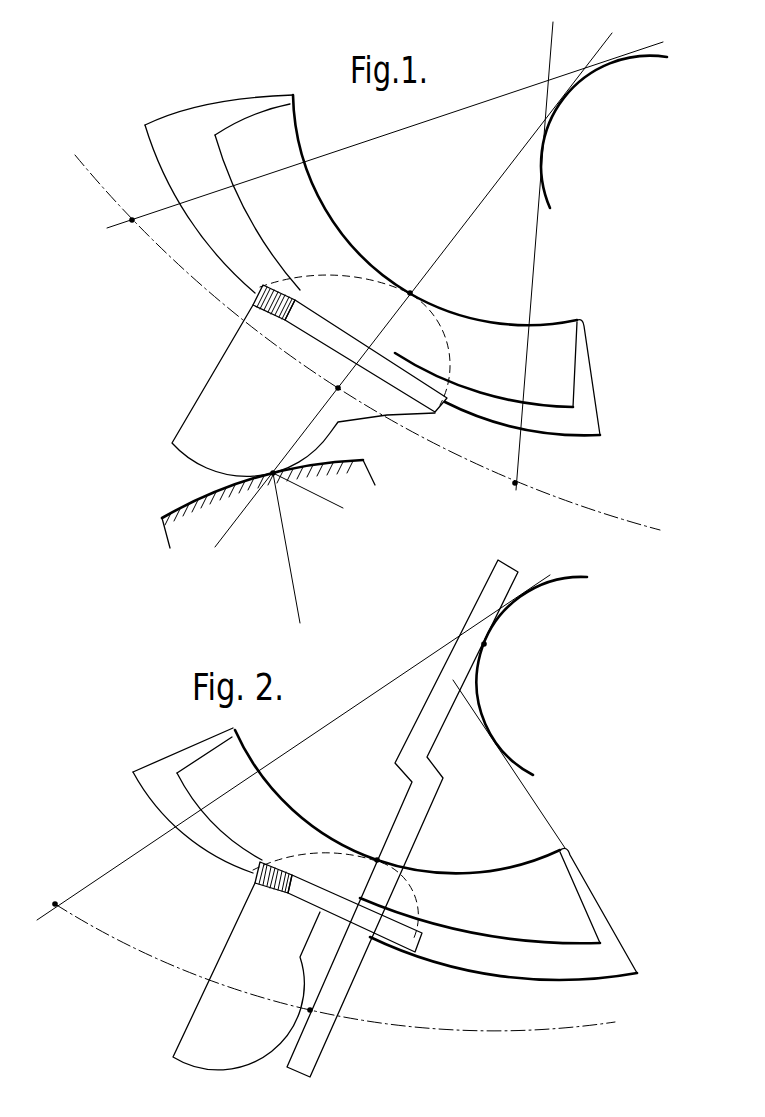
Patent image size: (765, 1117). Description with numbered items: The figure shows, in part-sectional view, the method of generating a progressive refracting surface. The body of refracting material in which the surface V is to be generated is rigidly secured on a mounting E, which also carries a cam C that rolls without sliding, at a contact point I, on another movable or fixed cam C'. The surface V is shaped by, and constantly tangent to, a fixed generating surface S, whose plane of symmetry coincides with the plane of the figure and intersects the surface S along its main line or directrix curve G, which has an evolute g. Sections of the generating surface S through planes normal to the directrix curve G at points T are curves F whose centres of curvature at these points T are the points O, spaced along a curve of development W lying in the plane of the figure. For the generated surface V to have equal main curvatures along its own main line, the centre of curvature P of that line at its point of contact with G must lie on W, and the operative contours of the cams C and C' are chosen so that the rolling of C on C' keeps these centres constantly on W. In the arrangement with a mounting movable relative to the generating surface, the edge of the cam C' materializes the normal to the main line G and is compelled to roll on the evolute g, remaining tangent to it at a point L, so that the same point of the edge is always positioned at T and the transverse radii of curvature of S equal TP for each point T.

In FIG. 1, the main line or directrix curve G is at (326, 189).
In FIG. 2, the main line or directrix curve G is at (289, 781).
In FIG. 1, the fixed generating surface S is at (549, 334).
In FIG. 2, the fixed generating surface S is at (567, 920).
In FIG. 1, the mounting E is at (297, 315).
In FIG. 2, the mounting E is at (311, 899).
In FIG. 1, the surface to be generated V is at (257, 290).
In FIG. 2, the surface to be generated V is at (259, 879).
In FIG. 1, the cam C is at (277, 390).
In FIG. 2, the cam C is at (246, 976).
In FIG. 1, the cam C' is at (260, 522).
In FIG. 2, the cam C' is at (402, 818).
In FIG. 1, the contact point I is at (268, 463).
In FIG. 1, the section curve F is at (209, 193).
In FIG. 2, the section curve F is at (113, 858).
In FIG. 1, the centre of curvature O is at (322, 364).
In FIG. 2, the centre of curvature O is at (54, 891).
In FIG. 1, the centre of curvature P is at (335, 389).
In FIG. 2, the centre of curvature P is at (306, 1006).
In FIG. 1, the point T is at (417, 291).
In FIG. 2, the point T is at (375, 855).
In FIG. 1, the evolute g is at (561, 194).
In FIG. 2, the evolute g is at (496, 711).
In FIG. 1, the curve of development W is at (657, 530).
In FIG. 2, the curve of development W is at (93, 937).
In FIG. 2, the point of tangency L is at (492, 645).